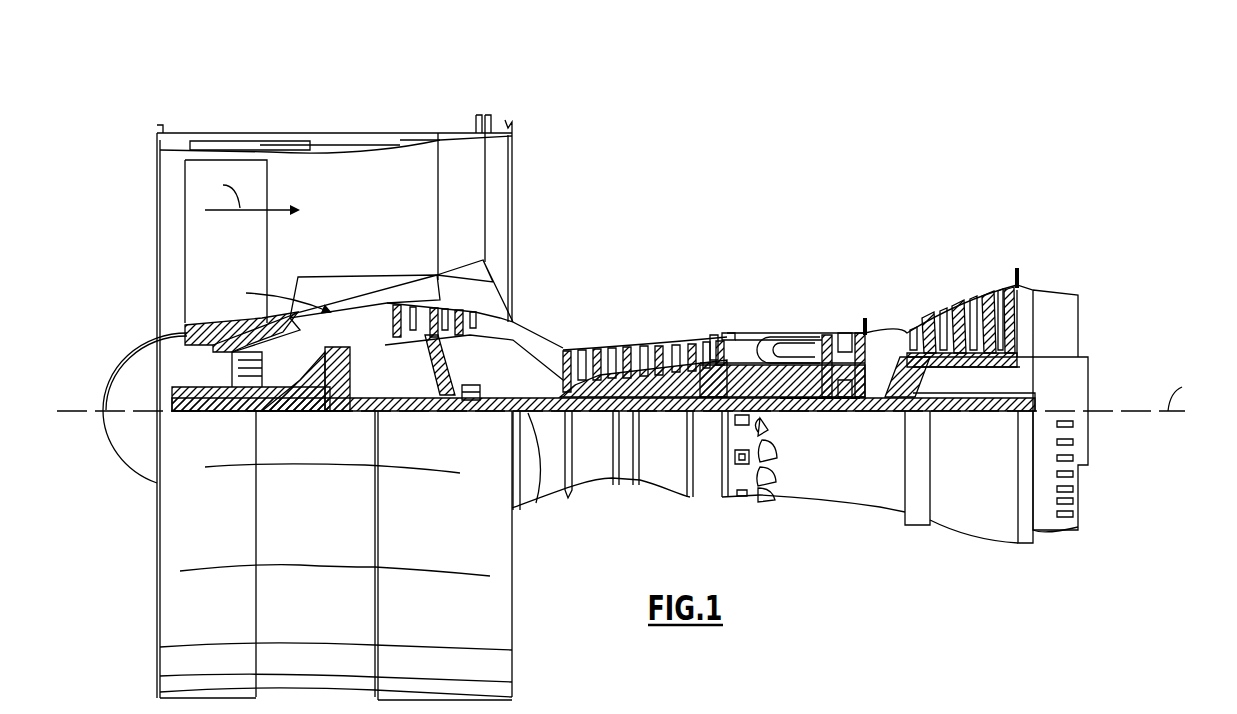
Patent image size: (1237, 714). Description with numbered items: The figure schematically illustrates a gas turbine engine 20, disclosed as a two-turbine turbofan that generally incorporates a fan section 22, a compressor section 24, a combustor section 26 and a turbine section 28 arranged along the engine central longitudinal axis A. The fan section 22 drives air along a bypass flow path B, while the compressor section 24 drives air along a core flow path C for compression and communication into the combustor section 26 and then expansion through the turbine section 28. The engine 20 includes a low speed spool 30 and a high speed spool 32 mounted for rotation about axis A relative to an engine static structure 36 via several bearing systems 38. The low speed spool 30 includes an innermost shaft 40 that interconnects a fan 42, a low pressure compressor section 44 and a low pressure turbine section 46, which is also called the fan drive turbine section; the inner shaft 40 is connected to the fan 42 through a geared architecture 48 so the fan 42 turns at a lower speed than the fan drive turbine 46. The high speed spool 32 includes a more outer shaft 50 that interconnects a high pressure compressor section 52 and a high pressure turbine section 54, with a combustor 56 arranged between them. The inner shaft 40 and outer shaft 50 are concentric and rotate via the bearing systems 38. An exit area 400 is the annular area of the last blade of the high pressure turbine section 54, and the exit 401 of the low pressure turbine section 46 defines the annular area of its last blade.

The gas turbine engine 20 is at (782, 188).
The fan section 22 is at (265, 122).
The compressor section 24 is at (563, 323).
The combustor section 26 is at (774, 300).
The turbine section 28 is at (925, 270).
The low speed spool 30 is at (666, 418).
The high speed spool 32 is at (713, 343).
The engine static structure 36 is at (705, 500).
The bearing systems 38 is at (472, 410).
The innermost shaft 40 is at (536, 503).
The fan 42 is at (199, 257).
The low pressure compressor section 44 is at (485, 322).
The low pressure turbine section 46 is at (966, 310).
The geared architecture 48 is at (342, 395).
The outer shaft 50 is at (778, 412).
The high pressure compressor section 52 is at (635, 348).
The high pressure turbine section 54 is at (851, 412).
The combustor 56 is at (782, 340).
The exit area 400 is at (861, 318).
The exit 401 is at (1020, 273).